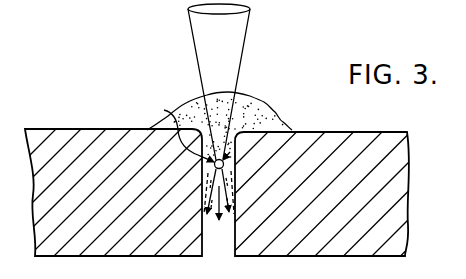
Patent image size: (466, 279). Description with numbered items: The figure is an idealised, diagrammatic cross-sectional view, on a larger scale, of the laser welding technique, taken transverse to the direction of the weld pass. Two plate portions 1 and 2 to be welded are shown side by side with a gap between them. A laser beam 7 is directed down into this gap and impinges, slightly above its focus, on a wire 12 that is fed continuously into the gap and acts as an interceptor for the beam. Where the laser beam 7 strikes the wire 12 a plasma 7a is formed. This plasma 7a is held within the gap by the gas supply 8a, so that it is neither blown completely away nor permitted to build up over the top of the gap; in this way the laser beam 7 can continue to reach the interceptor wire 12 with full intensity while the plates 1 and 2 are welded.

The plate portion 1 is at (88, 129).
The plate portion 2 is at (303, 131).
The laser beam 7 is at (232, 62).
The plasma 7a is at (215, 224).
The gas supply 8a is at (259, 99).
The wire 12 is at (180, 131).